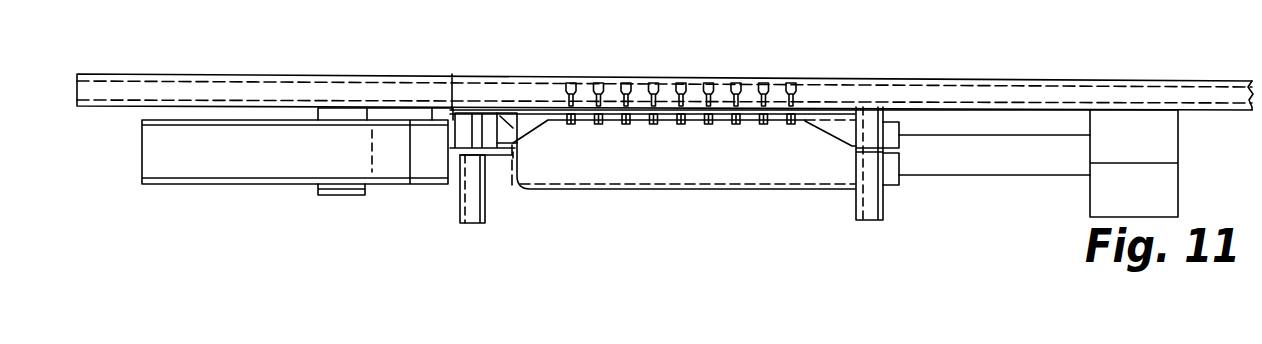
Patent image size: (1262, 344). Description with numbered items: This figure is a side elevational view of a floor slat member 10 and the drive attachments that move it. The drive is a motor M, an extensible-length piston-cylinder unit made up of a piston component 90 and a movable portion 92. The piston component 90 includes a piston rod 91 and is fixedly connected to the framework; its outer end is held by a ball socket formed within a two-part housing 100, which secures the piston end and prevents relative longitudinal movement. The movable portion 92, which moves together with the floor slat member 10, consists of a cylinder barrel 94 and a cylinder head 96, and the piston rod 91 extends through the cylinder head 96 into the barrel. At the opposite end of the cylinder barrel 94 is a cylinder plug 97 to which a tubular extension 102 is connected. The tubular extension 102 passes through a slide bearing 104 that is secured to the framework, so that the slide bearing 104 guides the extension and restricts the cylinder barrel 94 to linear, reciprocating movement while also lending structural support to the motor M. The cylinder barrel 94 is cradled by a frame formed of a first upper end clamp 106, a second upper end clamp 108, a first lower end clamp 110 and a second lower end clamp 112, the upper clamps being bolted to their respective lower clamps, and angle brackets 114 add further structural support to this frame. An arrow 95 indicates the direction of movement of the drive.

The floor slat member 10 is at (835, 82).
The motor M is at (752, 168).
The piston component 90 is at (1203, 273).
The piston rod 91 is at (1027, 158).
The movable portion 92 is at (768, 243).
The cylinder barrel 94 is at (688, 175).
The direction of movement 95 is at (850, 232).
The cylinder head 96 is at (893, 185).
The cylinder plug 97 is at (502, 178).
The two-part housing 100 is at (1180, 152).
The tubular extension 102 is at (217, 165).
The slide bearing 104 is at (343, 195).
The first upper end clamp 106 is at (477, 130).
The second upper end clamp 108 is at (872, 137).
The first lower end clamp 110 is at (472, 230).
The second lower end clamp 112 is at (872, 210).
The angle bracket 114 is at (838, 143).